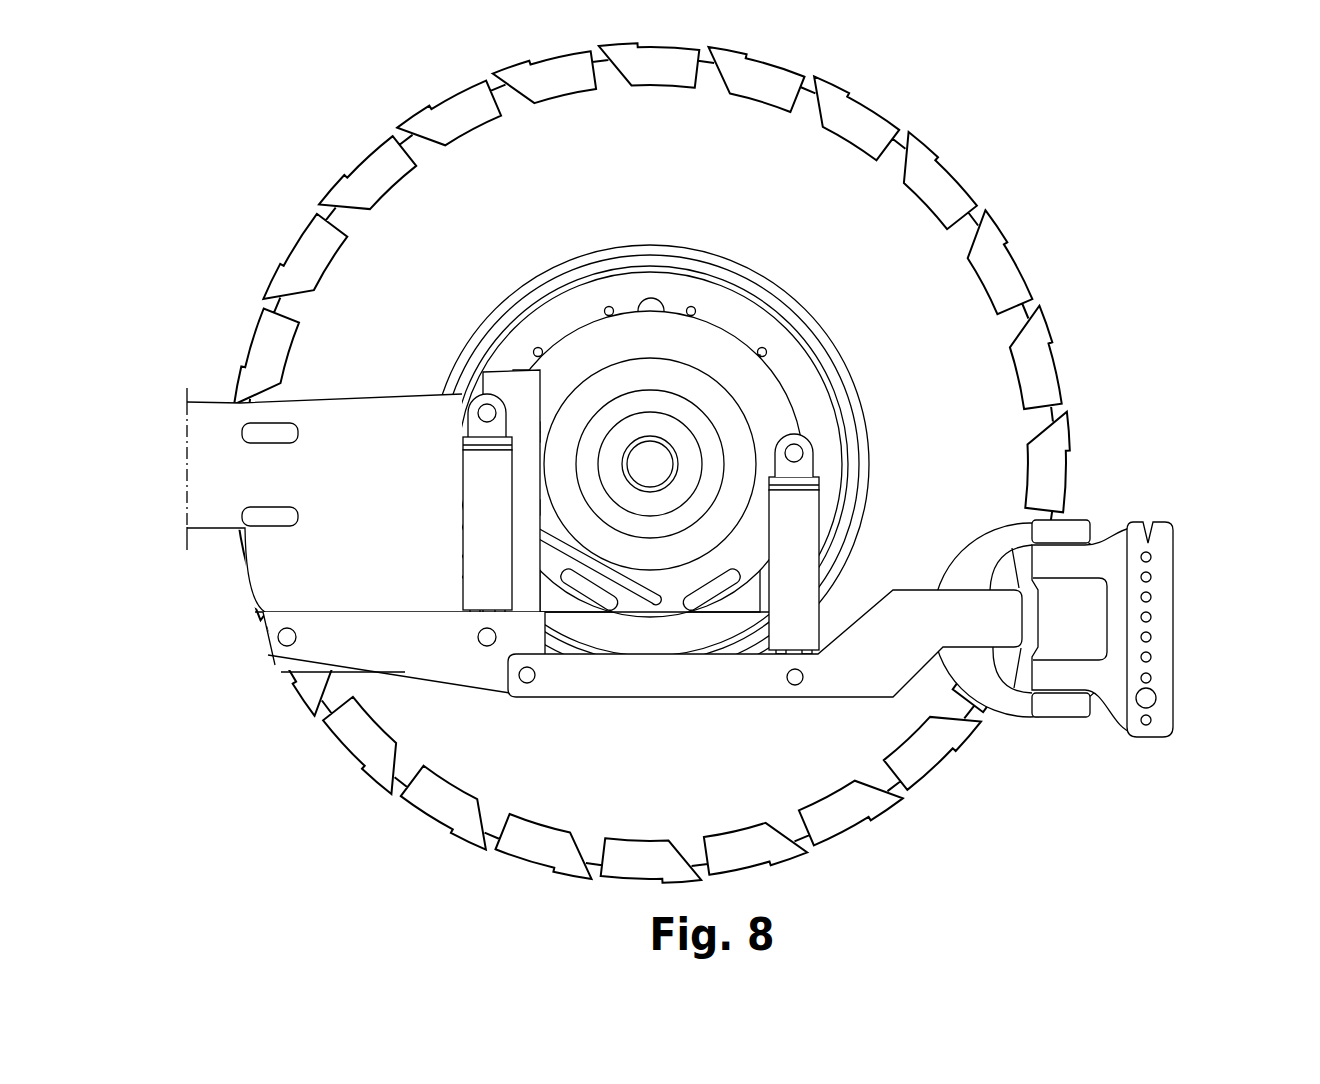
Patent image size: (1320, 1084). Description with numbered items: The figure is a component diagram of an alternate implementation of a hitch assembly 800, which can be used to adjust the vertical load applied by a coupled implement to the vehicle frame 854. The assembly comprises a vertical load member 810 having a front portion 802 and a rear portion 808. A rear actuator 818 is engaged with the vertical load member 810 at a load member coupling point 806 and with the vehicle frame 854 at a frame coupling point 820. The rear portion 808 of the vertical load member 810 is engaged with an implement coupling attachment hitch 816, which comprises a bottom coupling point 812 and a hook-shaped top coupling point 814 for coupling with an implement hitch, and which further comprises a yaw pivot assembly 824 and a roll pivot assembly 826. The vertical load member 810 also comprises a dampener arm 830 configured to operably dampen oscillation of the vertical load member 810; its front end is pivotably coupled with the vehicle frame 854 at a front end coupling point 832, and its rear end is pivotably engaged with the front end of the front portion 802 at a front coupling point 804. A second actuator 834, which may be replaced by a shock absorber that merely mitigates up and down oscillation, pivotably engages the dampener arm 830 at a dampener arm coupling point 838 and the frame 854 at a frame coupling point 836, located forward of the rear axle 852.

The hitch assembly 800 is at (1166, 160).
The front portion 802 is at (658, 687).
The front coupling point 804 is at (519, 694).
The load member coupling point 806 is at (787, 689).
The rear portion 808 is at (933, 748).
The vertical load member 810 is at (828, 714).
The bottom coupling point 812 is at (1171, 703).
The top coupling point 814 is at (1151, 522).
The implement coupling attachment hitch 816 is at (1185, 606).
The rear actuator 818 is at (805, 510).
The frame coupling point 820 is at (797, 446).
The yaw pivot assembly 824 is at (1086, 524).
The roll pivot assembly 826 is at (1006, 663).
The dampener arm 830 is at (405, 672).
The front end coupling point 832 is at (279, 655).
The second actuator 834 is at (463, 432).
The frame coupling point 836 is at (490, 396).
The dampener arm coupling point 838 is at (479, 648).
The rear axle 852 is at (664, 390).
The vehicle frame 854 is at (220, 388).